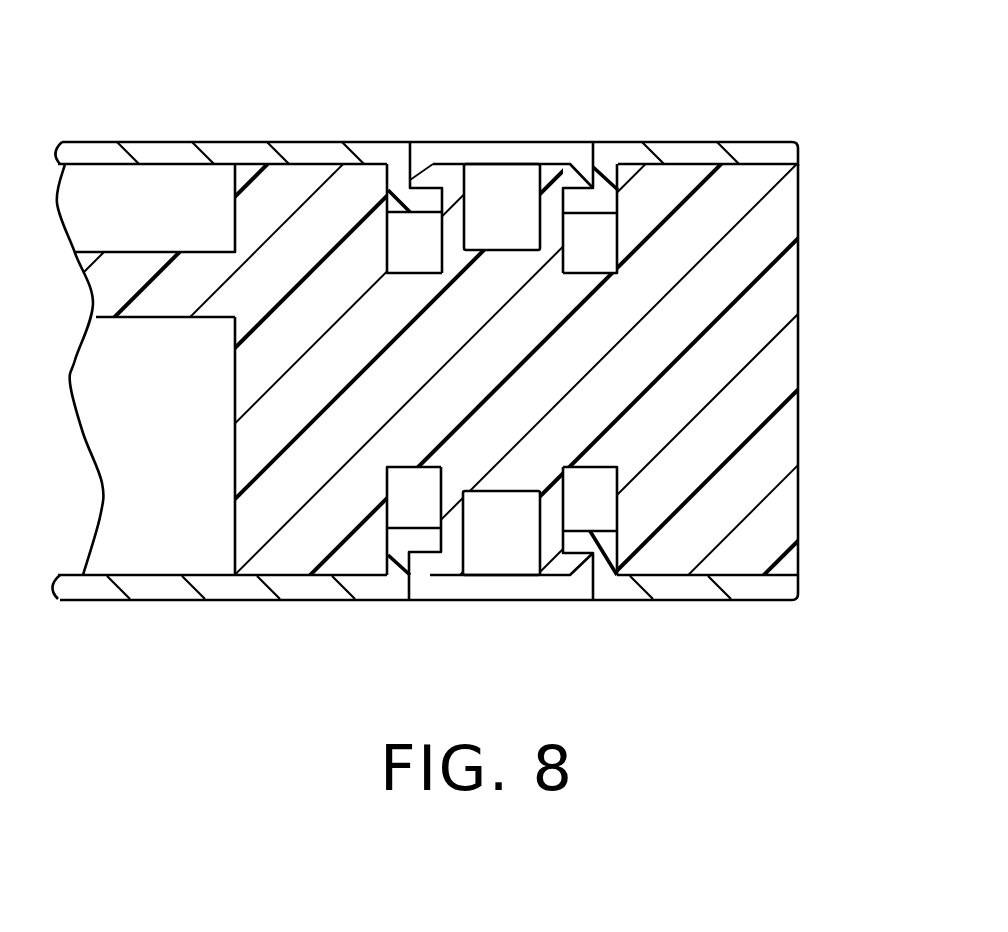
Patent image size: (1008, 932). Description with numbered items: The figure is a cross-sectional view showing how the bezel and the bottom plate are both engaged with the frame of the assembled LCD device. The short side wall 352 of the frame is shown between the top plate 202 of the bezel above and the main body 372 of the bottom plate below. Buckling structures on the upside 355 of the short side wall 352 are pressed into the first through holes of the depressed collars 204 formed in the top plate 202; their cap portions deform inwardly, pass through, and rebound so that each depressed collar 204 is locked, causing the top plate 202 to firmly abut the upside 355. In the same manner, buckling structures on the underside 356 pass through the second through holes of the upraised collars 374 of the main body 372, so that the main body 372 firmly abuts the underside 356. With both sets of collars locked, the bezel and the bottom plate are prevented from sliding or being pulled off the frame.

The top plate 202 is at (682, 152).
The depressed collar 204 is at (427, 202).
The short side wall 352 is at (735, 257).
The upside 355 is at (753, 158).
The underside 356 is at (749, 588).
The main body 372 is at (610, 588).
The upraised collar 374 is at (422, 538).